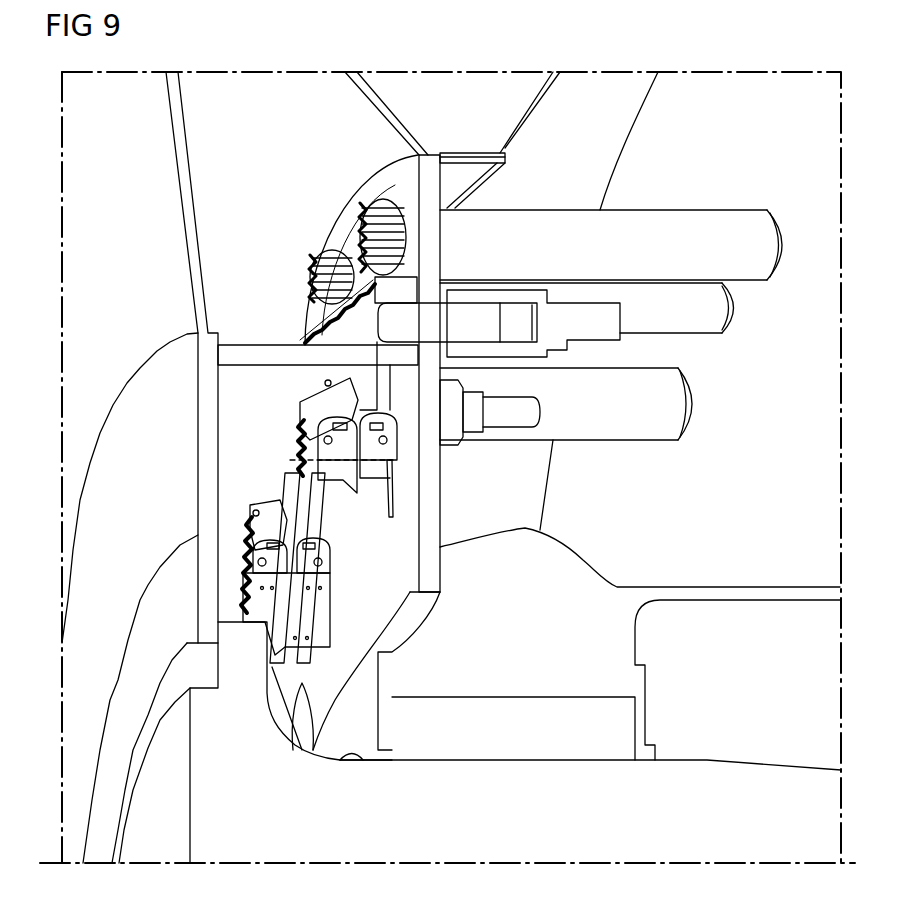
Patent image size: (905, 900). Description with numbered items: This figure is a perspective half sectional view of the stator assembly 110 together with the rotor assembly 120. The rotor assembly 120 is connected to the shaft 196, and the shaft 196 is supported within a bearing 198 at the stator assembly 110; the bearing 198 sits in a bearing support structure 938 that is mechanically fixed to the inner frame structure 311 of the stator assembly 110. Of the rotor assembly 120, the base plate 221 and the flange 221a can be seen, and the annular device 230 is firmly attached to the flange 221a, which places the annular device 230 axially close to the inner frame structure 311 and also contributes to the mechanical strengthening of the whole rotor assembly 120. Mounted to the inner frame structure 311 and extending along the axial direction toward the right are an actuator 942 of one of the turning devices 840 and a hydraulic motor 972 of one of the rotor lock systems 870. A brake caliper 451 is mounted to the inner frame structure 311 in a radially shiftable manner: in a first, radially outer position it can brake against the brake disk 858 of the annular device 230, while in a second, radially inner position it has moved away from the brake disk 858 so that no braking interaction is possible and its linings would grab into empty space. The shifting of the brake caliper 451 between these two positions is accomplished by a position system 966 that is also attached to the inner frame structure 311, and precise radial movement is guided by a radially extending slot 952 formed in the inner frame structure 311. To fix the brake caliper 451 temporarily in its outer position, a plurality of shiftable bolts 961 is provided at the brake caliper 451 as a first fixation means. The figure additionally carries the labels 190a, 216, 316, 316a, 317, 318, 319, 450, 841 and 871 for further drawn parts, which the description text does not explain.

The stator assembly 110 is at (755, 394).
The rotor assembly 120 is at (142, 327).
The mounting plane 190a is at (505, 862).
The shaft 196 is at (463, 782).
The bearing 198 is at (620, 724).
The receiving space 216 is at (319, 98).
The base plate 221 is at (183, 198).
The flange 221a is at (245, 358).
The annular device 230 is at (305, 285).
The inner frame structure 311 is at (430, 178).
The strut 316 is at (542, 135).
The hopper 316a is at (473, 88).
The hopper right wall 317 is at (535, 101).
The hopper bottom plate 318 is at (472, 160).
The hopper left wall 319 is at (378, 104).
The actuator assembly 450 is at (324, 516).
The brake caliper 451 is at (375, 487).
The turning device 840 is at (639, 278).
The gear wheel 841 is at (322, 262).
The brake disk 858 is at (330, 384).
The rotor lock system 870 is at (537, 325).
The drive cylinder 871 is at (467, 320).
The bearing support structure 938 is at (597, 580).
The actuator 942 is at (663, 233).
The slot 952 is at (390, 487).
The shiftable bolts 961 is at (293, 433).
The position system 966 is at (704, 405).
The hydraulic motor 972 is at (593, 320).